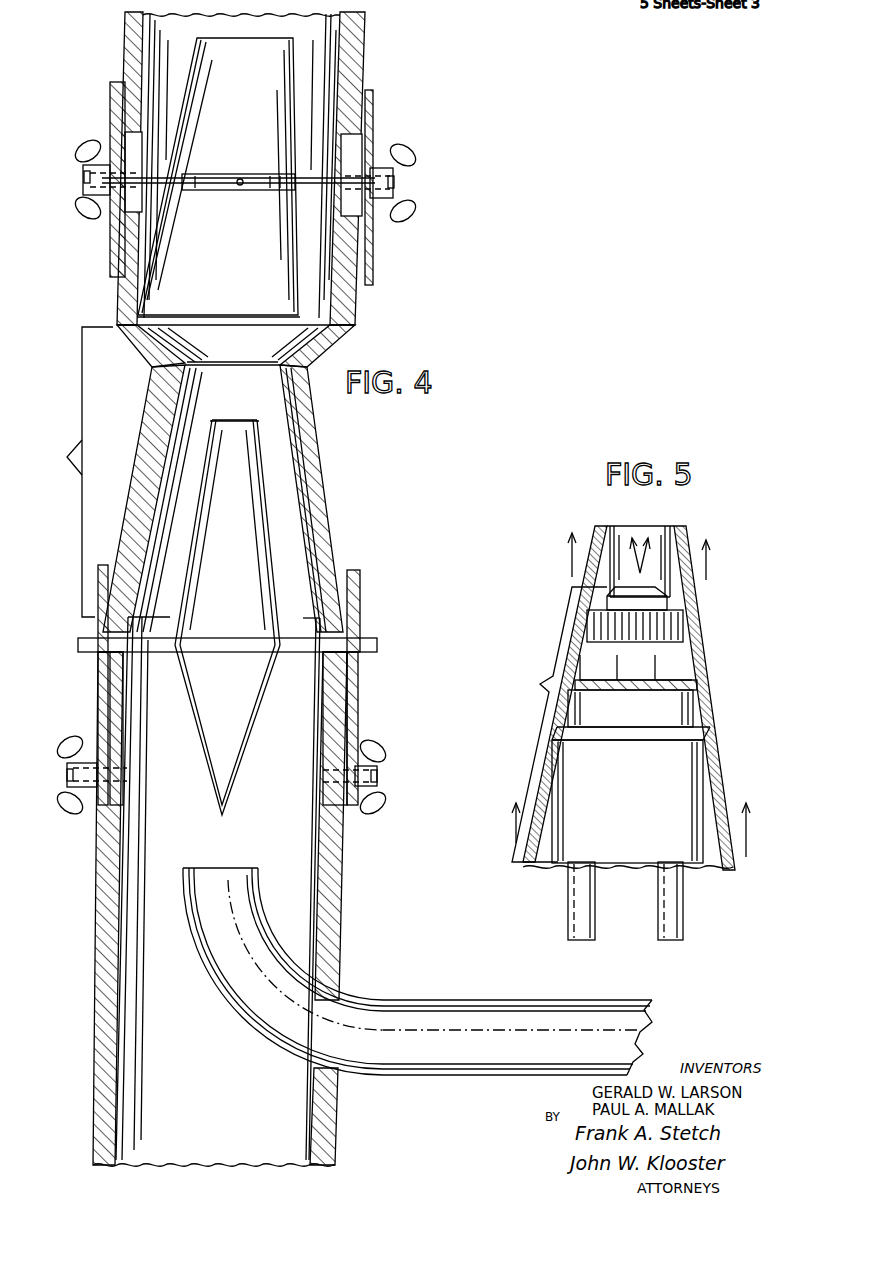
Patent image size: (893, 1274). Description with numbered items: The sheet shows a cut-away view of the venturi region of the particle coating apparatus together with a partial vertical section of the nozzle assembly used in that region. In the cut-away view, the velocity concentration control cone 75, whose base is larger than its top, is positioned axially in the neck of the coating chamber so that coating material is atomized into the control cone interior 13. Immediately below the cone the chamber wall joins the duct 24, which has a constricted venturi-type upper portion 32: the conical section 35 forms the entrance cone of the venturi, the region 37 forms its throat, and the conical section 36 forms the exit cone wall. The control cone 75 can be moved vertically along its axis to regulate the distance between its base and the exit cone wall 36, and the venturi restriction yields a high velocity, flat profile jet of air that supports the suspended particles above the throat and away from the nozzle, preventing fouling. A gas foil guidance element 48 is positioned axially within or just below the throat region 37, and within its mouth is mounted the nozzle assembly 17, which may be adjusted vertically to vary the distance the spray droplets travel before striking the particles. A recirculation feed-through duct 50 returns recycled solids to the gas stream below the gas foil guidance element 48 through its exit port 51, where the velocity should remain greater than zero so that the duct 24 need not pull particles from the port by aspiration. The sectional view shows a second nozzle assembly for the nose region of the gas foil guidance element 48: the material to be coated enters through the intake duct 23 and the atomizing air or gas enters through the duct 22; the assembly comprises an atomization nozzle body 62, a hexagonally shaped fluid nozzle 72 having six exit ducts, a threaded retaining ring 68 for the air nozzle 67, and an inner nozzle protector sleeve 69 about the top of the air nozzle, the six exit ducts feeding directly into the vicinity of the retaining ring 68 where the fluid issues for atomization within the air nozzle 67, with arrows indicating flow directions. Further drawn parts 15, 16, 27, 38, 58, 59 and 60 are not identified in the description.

In FIG. 4, the control cone interior 13 is at (248, 72).
In FIG. 4, the velocity concentration control cone 75 is at (295, 88).
In FIG. 4, the bolt 15 is at (313, 177).
In FIG. 4, the wing nut 27 is at (128, 143).
In FIG. 4, the flange 16 is at (110, 254).
In FIG. 4, the exit cone wall 36 is at (353, 342).
In FIG. 4, the venturi throat 37 is at (308, 375).
In FIG. 4, the entrance cone 35 is at (327, 483).
In FIG. 4, the gas foil guidance element 48 is at (275, 565).
In FIG. 5, the gas foil guidance element 48 is at (700, 712).
In FIG. 4, the nozzle tip 58 is at (228, 418).
In FIG. 5, the nozzle tip 58 is at (662, 527).
In FIG. 4, the support column 38 is at (312, 618).
In FIG. 4, the constricted venturi-type upper portion 32 is at (75, 472).
In FIG. 4, the sleeve column 59 is at (112, 660).
In FIG. 4, the intake duct 23 is at (148, 672).
In FIG. 5, the intake duct 23 is at (585, 938).
In FIG. 4, the atomization air duct 22 is at (336, 692).
In FIG. 5, the atomization air duct 22 is at (672, 938).
In FIG. 4, the wing nut 60 is at (93, 807).
In FIG. 4, the exit port 51 is at (220, 868).
In FIG. 4, the feed-through duct 50 is at (456, 1023).
In FIG. 4, the duct 24 is at (103, 970).
In FIG. 5, the inner nozzle protector sleeve 69 is at (601, 527).
In FIG. 5, the air nozzle 67 is at (648, 602).
In FIG. 5, the retaining ring 68 is at (672, 625).
In FIG. 5, the fluid nozzle 72 is at (690, 668).
In FIG. 5, the atomization nozzle body 62 is at (670, 720).
In FIG. 5, the nozzle assembly 17 is at (559, 724).